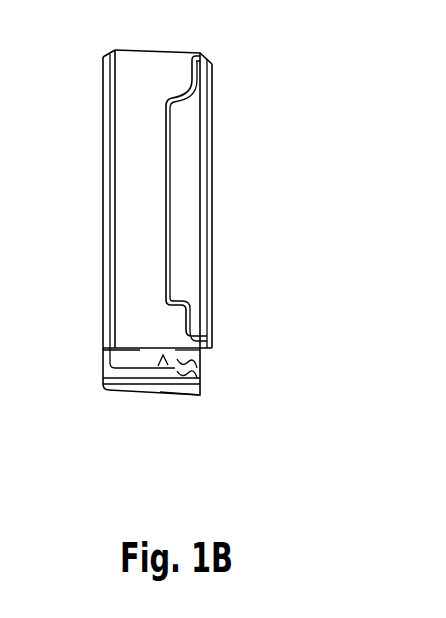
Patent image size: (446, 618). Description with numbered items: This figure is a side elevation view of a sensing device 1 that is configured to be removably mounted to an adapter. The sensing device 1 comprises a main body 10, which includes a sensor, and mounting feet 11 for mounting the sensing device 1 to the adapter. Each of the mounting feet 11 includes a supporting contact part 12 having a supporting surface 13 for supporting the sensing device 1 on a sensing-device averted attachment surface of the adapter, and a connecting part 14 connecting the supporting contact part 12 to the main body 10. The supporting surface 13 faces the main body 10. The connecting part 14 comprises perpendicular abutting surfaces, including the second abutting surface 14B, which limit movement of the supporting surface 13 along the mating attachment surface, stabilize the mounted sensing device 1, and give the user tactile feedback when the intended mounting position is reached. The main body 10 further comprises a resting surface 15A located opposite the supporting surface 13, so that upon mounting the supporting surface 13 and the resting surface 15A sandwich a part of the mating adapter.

The sensing device 1 is at (247, 101).
The main body 10 is at (137, 210).
The mounting feet 11 is at (108, 395).
The supporting contact part 12 is at (174, 395).
The supporting surface 13 is at (200, 372).
The connecting part 14 is at (137, 354).
The second abutting surface 14B is at (195, 363).
The resting surface 15A is at (156, 348).